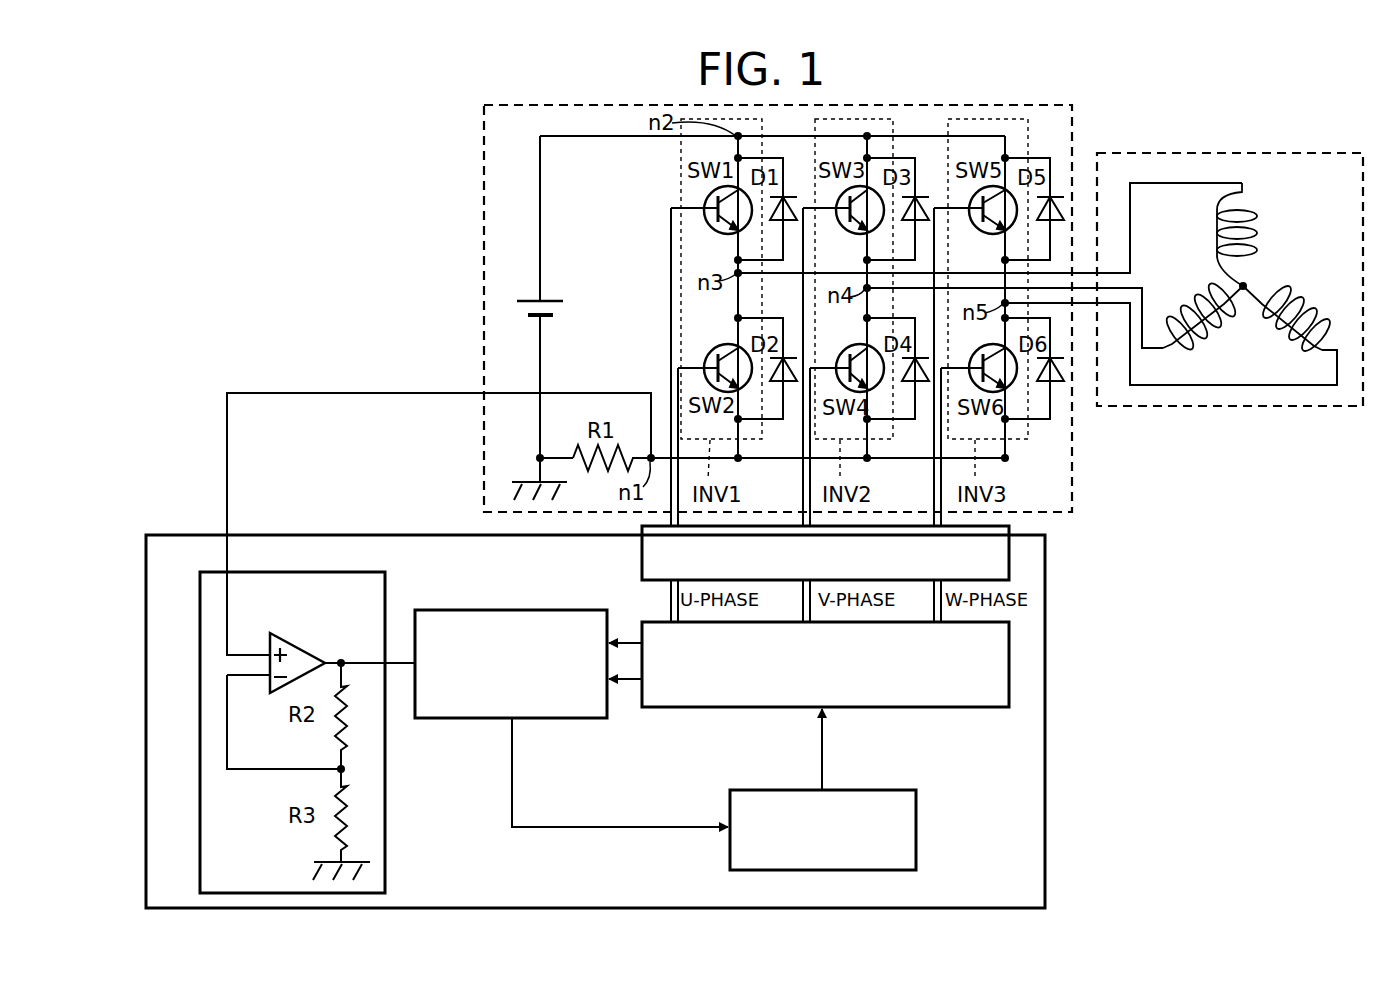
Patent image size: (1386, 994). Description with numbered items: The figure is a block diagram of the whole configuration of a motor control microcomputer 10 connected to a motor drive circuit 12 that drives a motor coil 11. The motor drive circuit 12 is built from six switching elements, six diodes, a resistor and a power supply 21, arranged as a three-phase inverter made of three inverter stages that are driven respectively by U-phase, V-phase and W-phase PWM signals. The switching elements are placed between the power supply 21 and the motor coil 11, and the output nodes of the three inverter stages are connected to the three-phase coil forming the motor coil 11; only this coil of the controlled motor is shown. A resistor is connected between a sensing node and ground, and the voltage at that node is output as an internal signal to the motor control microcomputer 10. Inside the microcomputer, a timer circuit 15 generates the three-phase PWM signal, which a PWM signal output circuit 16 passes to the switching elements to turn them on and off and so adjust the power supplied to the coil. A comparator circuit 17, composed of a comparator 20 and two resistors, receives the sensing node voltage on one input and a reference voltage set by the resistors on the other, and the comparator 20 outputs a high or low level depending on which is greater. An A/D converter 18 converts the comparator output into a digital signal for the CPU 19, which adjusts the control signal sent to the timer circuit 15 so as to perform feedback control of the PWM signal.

The motor control microcomputer 10 is at (1046, 753).
The motor coil 11 is at (1230, 407).
The motor drive circuit 12 is at (1073, 465).
The timer circuit 15 is at (1013, 660).
The PWM signal output circuit 16 is at (1013, 562).
The comparator circuit 17 is at (324, 732).
The A/D converter 18 is at (548, 719).
The CPU 19 is at (918, 833).
The comparator 20 is at (289, 641).
The power supply 21 is at (555, 311).